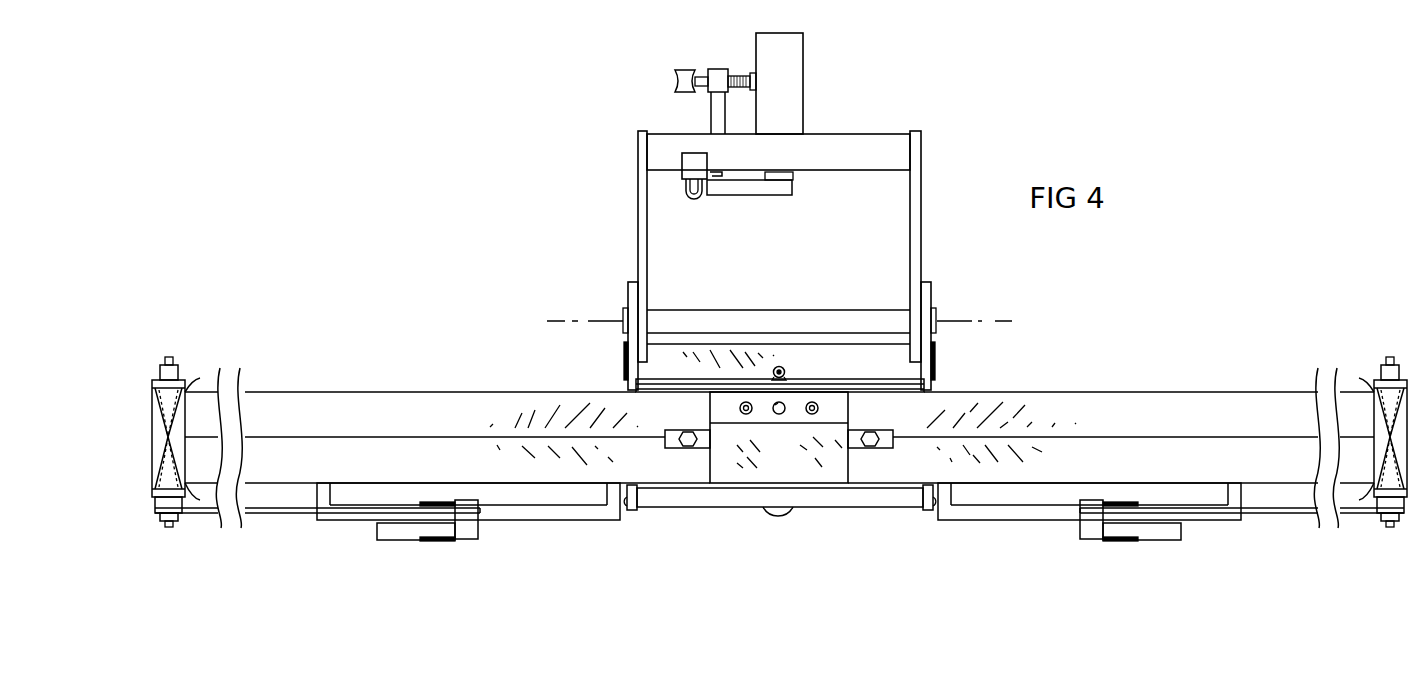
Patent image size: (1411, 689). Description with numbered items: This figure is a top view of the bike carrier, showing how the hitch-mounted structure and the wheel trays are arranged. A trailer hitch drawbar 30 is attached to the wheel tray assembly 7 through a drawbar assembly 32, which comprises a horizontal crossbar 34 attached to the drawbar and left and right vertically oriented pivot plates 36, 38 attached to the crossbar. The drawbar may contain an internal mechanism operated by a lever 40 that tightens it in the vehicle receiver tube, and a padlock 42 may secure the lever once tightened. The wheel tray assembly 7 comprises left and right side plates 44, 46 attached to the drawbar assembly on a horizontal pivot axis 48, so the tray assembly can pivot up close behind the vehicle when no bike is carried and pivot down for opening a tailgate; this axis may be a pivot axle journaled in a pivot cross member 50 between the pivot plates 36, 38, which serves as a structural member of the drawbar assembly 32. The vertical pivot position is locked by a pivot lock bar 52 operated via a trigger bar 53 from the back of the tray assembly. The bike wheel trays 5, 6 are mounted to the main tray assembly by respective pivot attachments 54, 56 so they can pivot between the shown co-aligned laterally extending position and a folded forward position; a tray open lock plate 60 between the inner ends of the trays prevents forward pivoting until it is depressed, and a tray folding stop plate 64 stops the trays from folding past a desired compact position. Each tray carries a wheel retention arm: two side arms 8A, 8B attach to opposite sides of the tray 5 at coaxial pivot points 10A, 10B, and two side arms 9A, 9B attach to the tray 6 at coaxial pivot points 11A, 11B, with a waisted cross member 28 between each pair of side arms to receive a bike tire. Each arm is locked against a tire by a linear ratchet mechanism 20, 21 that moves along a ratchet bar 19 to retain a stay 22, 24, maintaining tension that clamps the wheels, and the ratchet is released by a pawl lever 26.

The trailer hitch drawbar 30 is at (797, 65).
The horizontal crossbar 34 is at (835, 147).
The left pivot plate 36 is at (648, 233).
The right pivot plate 38 is at (910, 233).
The drawbar assembly 32 is at (586, 196).
The padlock 42 is at (693, 160).
The lever 40 is at (736, 190).
The pivot cross member 50 is at (723, 312).
The left side plate 44 is at (628, 295).
The right side plate 46 is at (931, 296).
The horizontal pivot axis 48 is at (995, 320).
The wheel tray assembly 7 is at (586, 361).
The pivot lock bar 52 is at (902, 368).
The tray folding stop plate 64 is at (806, 383).
The bike wheel tray 5 is at (373, 396).
The bike wheel tray 6 is at (1183, 396).
The tray open lock plate 60 is at (795, 418).
The pivot attachment 54 is at (687, 433).
The pivot attachment 56 is at (871, 433).
The trigger bar 53 is at (783, 511).
The ratchet bar 19 is at (532, 518).
The stay 22 is at (285, 514).
The stay 24 is at (1278, 514).
The pawl lever 26 is at (402, 533).
The linear ratchet mechanism 20 is at (456, 556).
The linear ratchet mechanism 21 is at (1101, 556).
The cross member 28 is at (178, 413).
The pivot point 10B is at (170, 362).
The side arm 8B is at (188, 378).
The side arm 8A is at (185, 505).
The pivot point 10A is at (168, 528).
The pivot point 11B is at (1390, 362).
The side arm 9B is at (1371, 378).
The side arm 9A is at (1374, 505).
The pivot point 11A is at (1390, 528).